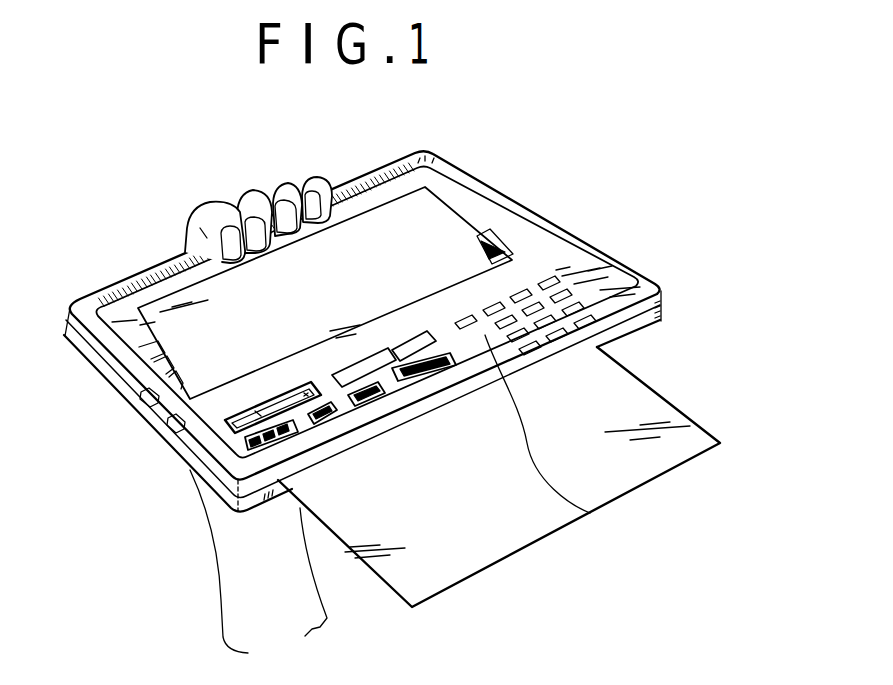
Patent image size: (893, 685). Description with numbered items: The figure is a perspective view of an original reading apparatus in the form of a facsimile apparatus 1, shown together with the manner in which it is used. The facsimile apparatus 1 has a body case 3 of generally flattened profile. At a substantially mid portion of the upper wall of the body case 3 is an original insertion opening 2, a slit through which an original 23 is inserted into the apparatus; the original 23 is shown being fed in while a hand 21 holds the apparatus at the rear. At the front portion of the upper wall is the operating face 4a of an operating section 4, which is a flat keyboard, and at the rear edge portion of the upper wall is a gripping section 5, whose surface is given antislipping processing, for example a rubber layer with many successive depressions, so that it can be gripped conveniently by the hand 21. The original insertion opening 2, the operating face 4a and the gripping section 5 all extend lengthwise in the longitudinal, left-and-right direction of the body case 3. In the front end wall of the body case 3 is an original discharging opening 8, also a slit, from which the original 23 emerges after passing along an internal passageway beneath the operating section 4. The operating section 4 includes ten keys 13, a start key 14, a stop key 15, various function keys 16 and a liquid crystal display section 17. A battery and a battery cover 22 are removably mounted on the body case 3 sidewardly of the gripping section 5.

The facsimile apparatus 1 is at (381, 346).
The original insertion opening 2 is at (494, 243).
The body case 3 is at (612, 254).
The operating section 4 is at (322, 465).
The operating face 4a is at (505, 345).
The gripping section 5 is at (170, 257).
The original discharging opening 8 is at (591, 513).
The ten keys 13 is at (657, 327).
The start key 14 is at (365, 362).
The stop key 15 is at (425, 332).
The function keys 16 is at (333, 418).
The liquid crystal display section 17 is at (223, 437).
The clip 21 is at (362, 177).
The battery cover 22 is at (118, 298).
The original 23 is at (418, 208).